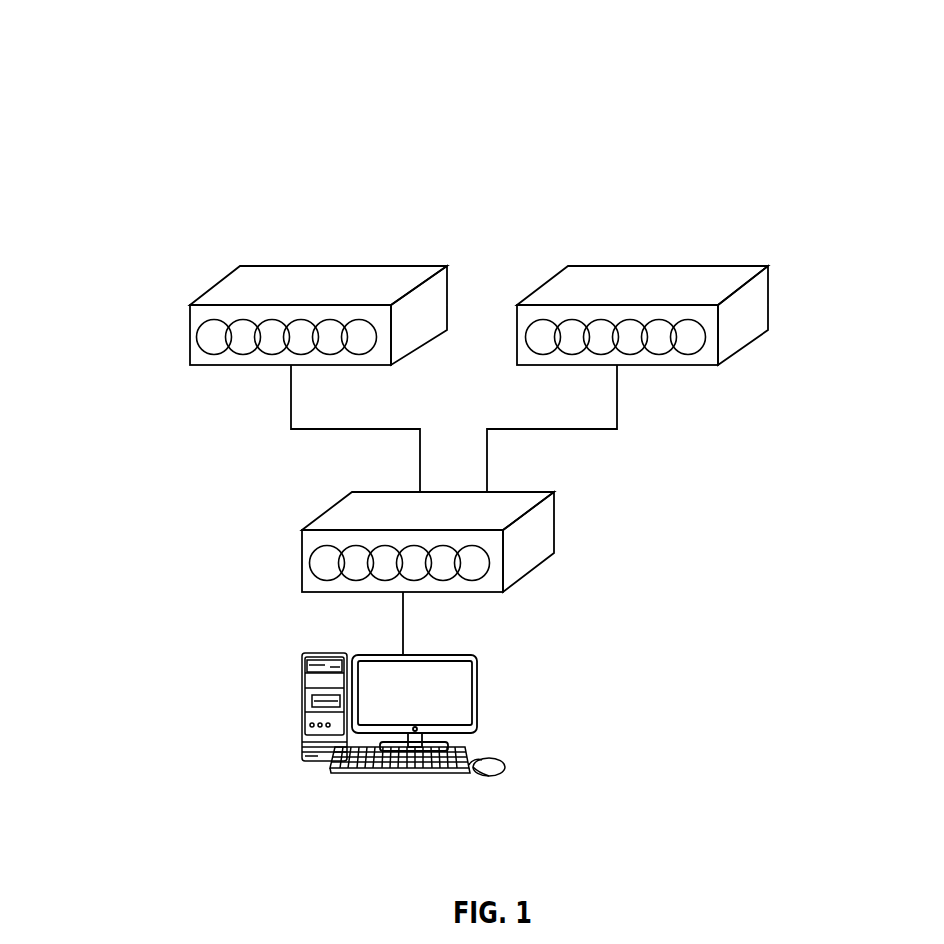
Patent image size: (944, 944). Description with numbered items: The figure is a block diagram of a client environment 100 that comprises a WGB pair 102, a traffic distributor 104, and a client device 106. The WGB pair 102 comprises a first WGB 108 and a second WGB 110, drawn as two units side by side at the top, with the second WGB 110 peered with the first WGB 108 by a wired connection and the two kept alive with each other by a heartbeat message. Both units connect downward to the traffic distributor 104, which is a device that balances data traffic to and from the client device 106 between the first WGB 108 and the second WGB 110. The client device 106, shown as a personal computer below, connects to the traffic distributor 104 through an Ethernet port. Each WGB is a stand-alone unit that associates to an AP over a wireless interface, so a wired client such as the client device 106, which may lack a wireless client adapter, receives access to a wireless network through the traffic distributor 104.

The client environment 100 is at (203, 110).
The WGB pair 102 is at (481, 214).
The traffic distributor 104 is at (556, 522).
The client device 106 is at (302, 700).
The first WGB 108 is at (670, 266).
The second WGB 110 is at (342, 266).